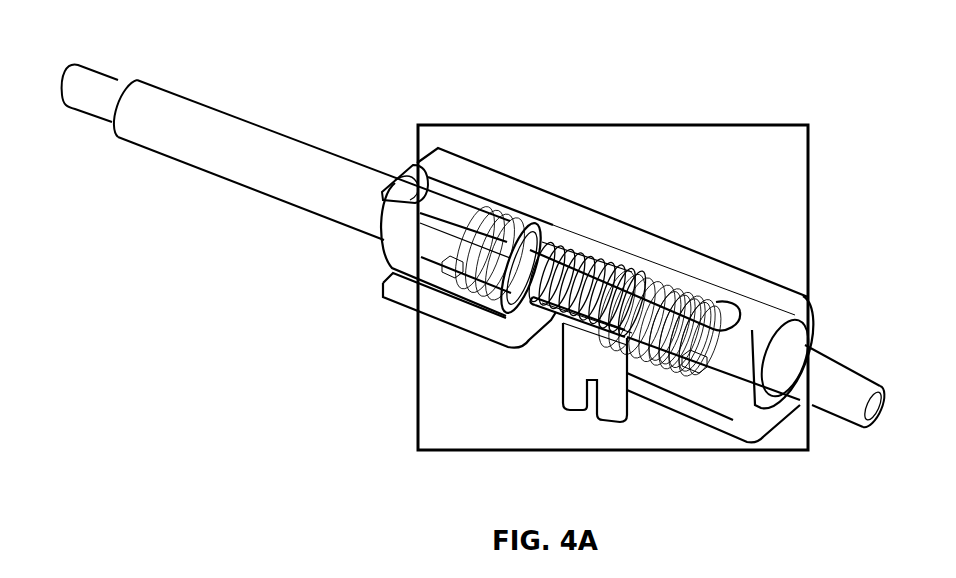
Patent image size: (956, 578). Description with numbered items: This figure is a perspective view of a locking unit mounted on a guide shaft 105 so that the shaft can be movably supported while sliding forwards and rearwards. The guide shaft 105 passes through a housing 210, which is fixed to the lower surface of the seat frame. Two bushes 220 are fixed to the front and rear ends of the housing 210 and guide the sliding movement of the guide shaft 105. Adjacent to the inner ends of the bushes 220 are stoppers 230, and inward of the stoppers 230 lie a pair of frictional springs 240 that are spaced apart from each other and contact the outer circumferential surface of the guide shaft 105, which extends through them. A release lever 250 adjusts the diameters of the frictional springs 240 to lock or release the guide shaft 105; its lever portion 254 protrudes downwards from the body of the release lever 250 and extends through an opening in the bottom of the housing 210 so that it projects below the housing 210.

The guide shaft 105 is at (284, 152).
The housing 210 is at (410, 288).
The bush 220 is at (395, 232).
The stopper 230 is at (482, 208).
The frictional spring 240 is at (507, 232).
The release lever 250 is at (540, 362).
The lever portion 254 is at (572, 387).